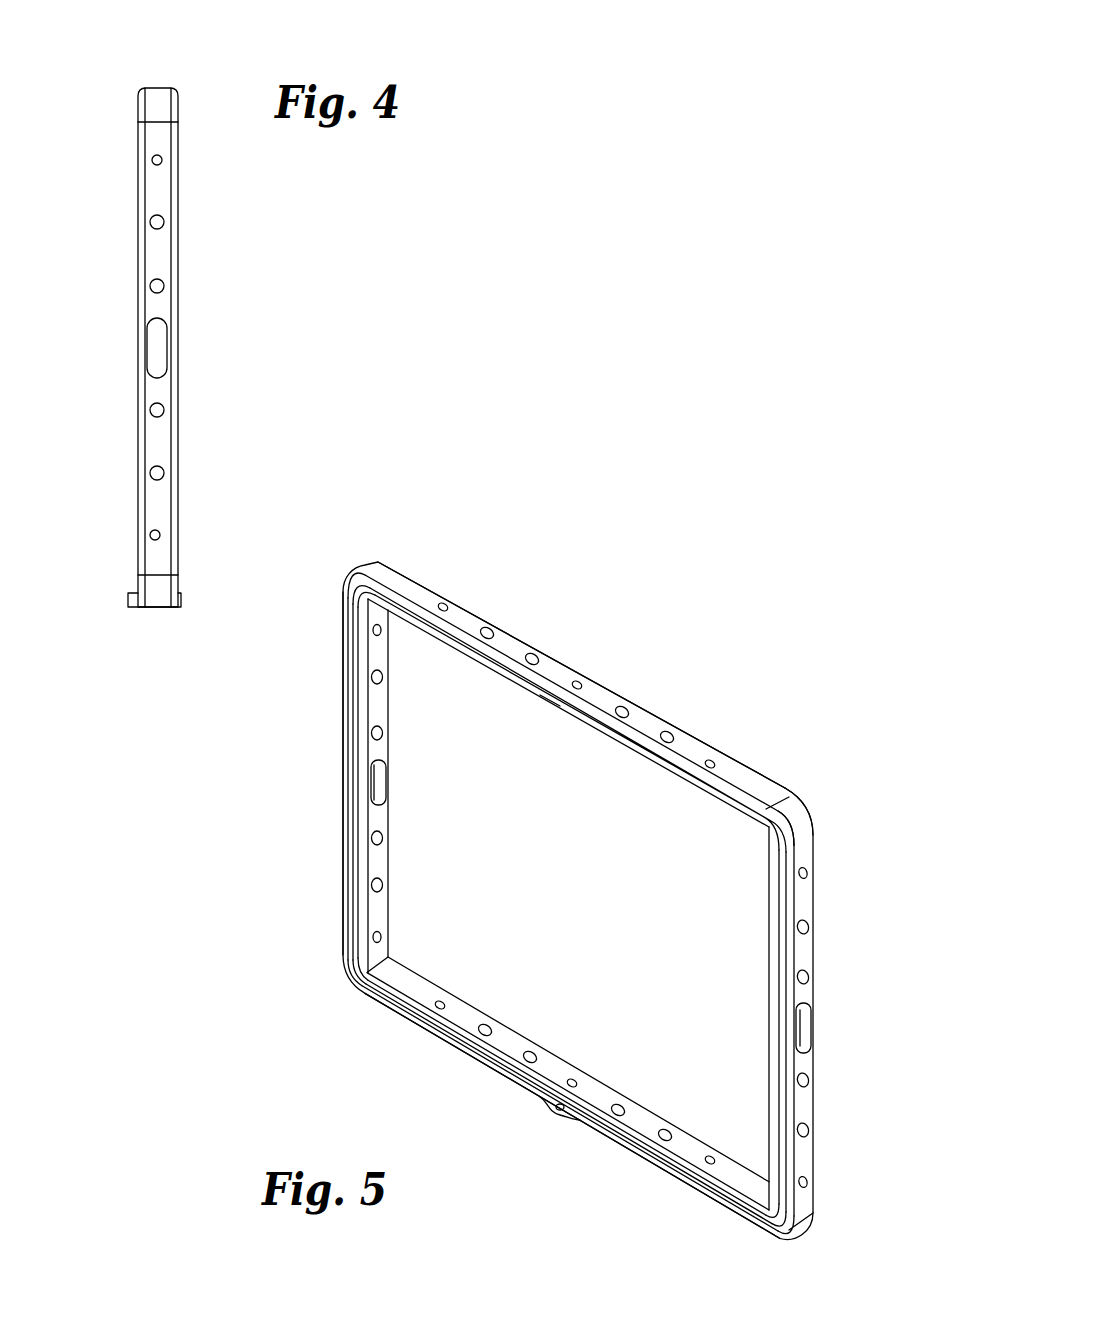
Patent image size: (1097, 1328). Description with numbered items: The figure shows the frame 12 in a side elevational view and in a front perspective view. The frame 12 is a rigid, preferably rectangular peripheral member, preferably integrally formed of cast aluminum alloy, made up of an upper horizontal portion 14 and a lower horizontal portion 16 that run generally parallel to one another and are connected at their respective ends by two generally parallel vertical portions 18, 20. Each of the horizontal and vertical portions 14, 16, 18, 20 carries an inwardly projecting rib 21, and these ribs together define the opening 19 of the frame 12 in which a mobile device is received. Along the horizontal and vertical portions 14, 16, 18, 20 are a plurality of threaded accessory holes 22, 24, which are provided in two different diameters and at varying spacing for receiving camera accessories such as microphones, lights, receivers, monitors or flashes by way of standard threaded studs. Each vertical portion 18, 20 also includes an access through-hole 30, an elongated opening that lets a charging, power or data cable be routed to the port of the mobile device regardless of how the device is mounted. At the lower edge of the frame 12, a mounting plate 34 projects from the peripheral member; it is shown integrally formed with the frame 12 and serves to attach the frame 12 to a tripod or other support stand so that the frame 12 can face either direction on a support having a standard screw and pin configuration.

In FIG. 4, the frame 12 is at (113, 70).
In FIG. 5, the frame 12 is at (686, 619).
In FIG. 5, the upper horizontal portion 14 is at (653, 723).
In FIG. 5, the lower horizontal portion 16 is at (392, 1012).
In FIG. 5, the vertical portion 18 is at (345, 815).
In FIG. 5, the opening 19 is at (800, 832).
In FIG. 5, the vertical portion 20 is at (808, 997).
In FIG. 5, the inwardly projecting rib 21 is at (552, 703).
In FIG. 4, the threaded accessory hole 22 is at (165, 222).
In FIG. 5, the threaded accessory hole 22 is at (383, 679).
In FIG. 4, the threaded accessory hole 24 is at (151, 160).
In FIG. 5, the threaded accessory hole 24 is at (579, 681).
In FIG. 4, the access through-hole 30 is at (160, 348).
In FIG. 5, the access through-hole 30 is at (386, 782).
In FIG. 4, the mounting plate 34 is at (127, 598).
In FIG. 5, the mounting plate 34 is at (562, 1115).